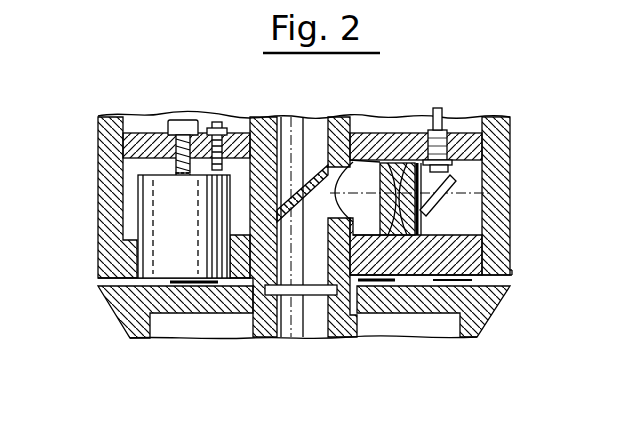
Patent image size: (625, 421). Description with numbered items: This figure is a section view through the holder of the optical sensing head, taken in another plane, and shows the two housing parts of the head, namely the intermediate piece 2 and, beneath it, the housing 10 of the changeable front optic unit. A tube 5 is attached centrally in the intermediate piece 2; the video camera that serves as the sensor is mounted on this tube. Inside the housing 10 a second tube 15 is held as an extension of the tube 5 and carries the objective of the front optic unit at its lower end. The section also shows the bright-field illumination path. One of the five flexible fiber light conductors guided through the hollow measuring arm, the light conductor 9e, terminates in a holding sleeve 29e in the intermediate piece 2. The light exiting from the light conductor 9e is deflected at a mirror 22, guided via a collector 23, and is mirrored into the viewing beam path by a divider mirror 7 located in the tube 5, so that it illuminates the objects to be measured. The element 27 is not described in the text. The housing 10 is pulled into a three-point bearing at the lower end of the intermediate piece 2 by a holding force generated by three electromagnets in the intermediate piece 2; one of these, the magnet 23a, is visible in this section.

The intermediate piece 2 is at (505, 188).
The tube 5 is at (257, 125).
The divider mirror 7 is at (313, 160).
The ball 27 is at (330, 190).
The holding sleeve 29e is at (482, 146).
The light conductor 9e is at (440, 108).
The collector 23 is at (419, 219).
The mirror 22 is at (455, 177).
The housing 10 is at (488, 303).
The second tube 15 is at (250, 338).
The magnet 23a is at (155, 250).